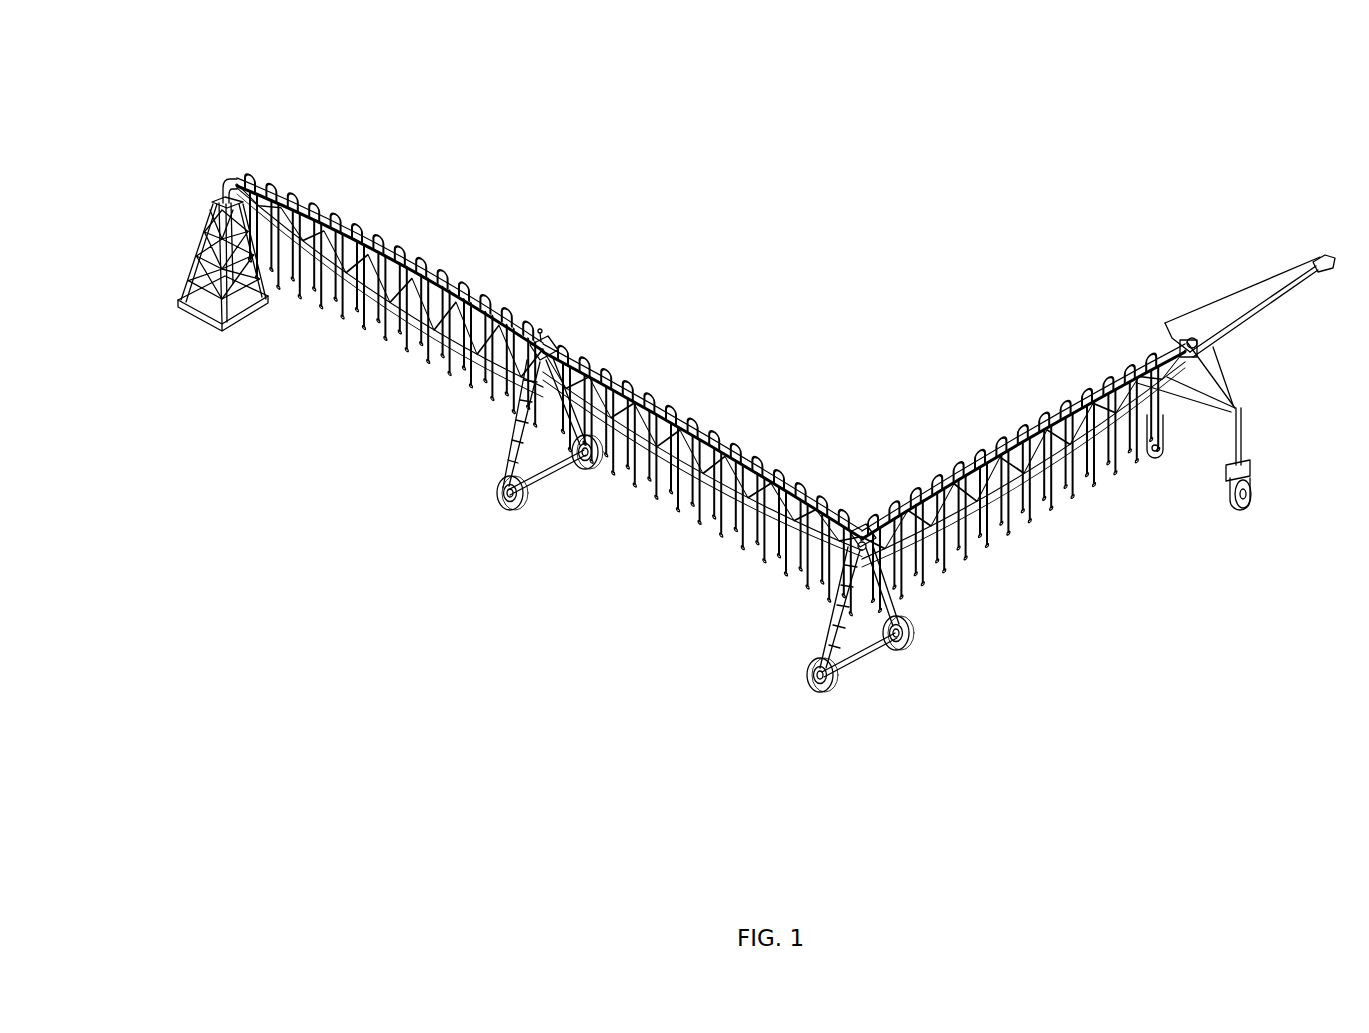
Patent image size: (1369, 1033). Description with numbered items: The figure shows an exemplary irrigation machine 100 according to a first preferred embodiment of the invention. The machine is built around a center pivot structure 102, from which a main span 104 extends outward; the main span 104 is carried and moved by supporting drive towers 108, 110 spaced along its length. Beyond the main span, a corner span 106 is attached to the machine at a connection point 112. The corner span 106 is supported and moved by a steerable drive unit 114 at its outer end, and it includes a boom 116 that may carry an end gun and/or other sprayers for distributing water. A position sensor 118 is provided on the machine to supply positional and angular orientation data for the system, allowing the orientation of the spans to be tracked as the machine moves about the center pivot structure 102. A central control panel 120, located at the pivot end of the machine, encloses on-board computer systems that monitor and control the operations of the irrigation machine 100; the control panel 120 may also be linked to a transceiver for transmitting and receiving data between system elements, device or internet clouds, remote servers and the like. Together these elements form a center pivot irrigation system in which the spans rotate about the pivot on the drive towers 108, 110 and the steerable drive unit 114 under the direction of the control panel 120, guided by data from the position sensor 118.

The irrigation machine 100 is at (1018, 66).
The center pivot structure 102 is at (214, 205).
The main span 104 is at (538, 298).
The corner span 106 is at (958, 405).
The drive tower 108 is at (495, 470).
The drive tower 110 is at (815, 635).
The connection point 112 is at (882, 560).
The steerable drive unit 114 is at (1235, 407).
The boom 116 is at (1255, 305).
The position sensor 118 is at (858, 530).
The central control panel 120 is at (210, 278).